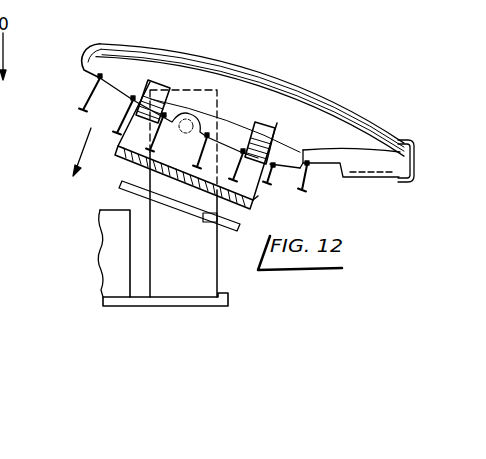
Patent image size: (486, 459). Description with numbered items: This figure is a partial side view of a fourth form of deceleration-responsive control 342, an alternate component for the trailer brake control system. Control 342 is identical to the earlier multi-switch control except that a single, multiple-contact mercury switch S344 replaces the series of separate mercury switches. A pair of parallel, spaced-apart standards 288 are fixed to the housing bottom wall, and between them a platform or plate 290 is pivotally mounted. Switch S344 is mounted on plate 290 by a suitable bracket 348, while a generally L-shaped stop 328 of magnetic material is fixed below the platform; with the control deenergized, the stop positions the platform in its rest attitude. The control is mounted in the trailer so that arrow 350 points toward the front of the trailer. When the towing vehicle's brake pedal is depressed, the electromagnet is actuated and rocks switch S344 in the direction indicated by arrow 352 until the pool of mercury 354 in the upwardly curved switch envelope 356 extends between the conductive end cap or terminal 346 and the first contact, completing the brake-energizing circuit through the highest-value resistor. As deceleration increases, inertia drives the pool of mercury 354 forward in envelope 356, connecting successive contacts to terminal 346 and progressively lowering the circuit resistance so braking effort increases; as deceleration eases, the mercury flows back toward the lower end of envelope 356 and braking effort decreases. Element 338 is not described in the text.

The switch envelope 356 is at (97, 50).
The conductive end cap or terminal 346 is at (413, 153).
The pool of mercury 354 is at (360, 162).
The deceleration-responsive control 342 is at (68, 122).
The arrow 352 is at (85, 160).
The bracket 348 is at (155, 66).
The multiple-contact mercury switch S344 is at (262, 67).
The arrow 350 is at (153, 14).
The platform or plate 290 is at (243, 204).
The L-shaped stop 328 is at (138, 193).
The support block 338 is at (110, 240).
The standards 288 is at (207, 255).